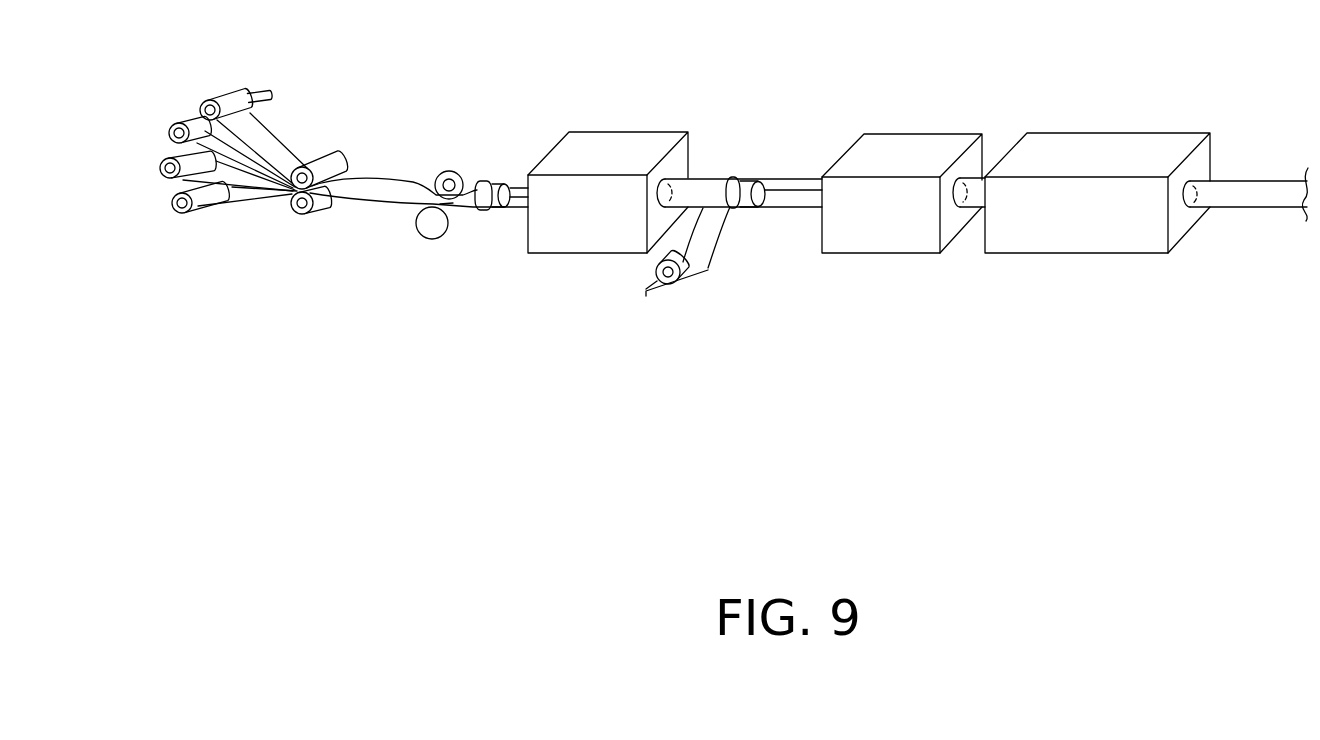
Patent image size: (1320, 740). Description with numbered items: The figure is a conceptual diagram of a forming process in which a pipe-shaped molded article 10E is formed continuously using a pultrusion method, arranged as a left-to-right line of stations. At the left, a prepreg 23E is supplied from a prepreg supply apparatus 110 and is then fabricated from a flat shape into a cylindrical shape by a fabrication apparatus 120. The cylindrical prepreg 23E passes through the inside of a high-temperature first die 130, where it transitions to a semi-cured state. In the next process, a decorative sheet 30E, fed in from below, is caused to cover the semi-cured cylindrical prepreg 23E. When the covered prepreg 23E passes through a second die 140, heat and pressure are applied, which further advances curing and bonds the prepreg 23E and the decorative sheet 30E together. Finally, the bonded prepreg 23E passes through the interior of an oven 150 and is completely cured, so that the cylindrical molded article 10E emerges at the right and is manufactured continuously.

The prepreg supply apparatus 110 is at (312, 140).
The prepreg 23E is at (380, 193).
The fabrication apparatus 120 is at (445, 160).
The first die 130 is at (632, 138).
The decorative sheet 30E is at (708, 250).
The second die 140 is at (918, 145).
The oven 150 is at (1152, 148).
The molded article 10E is at (1262, 200).